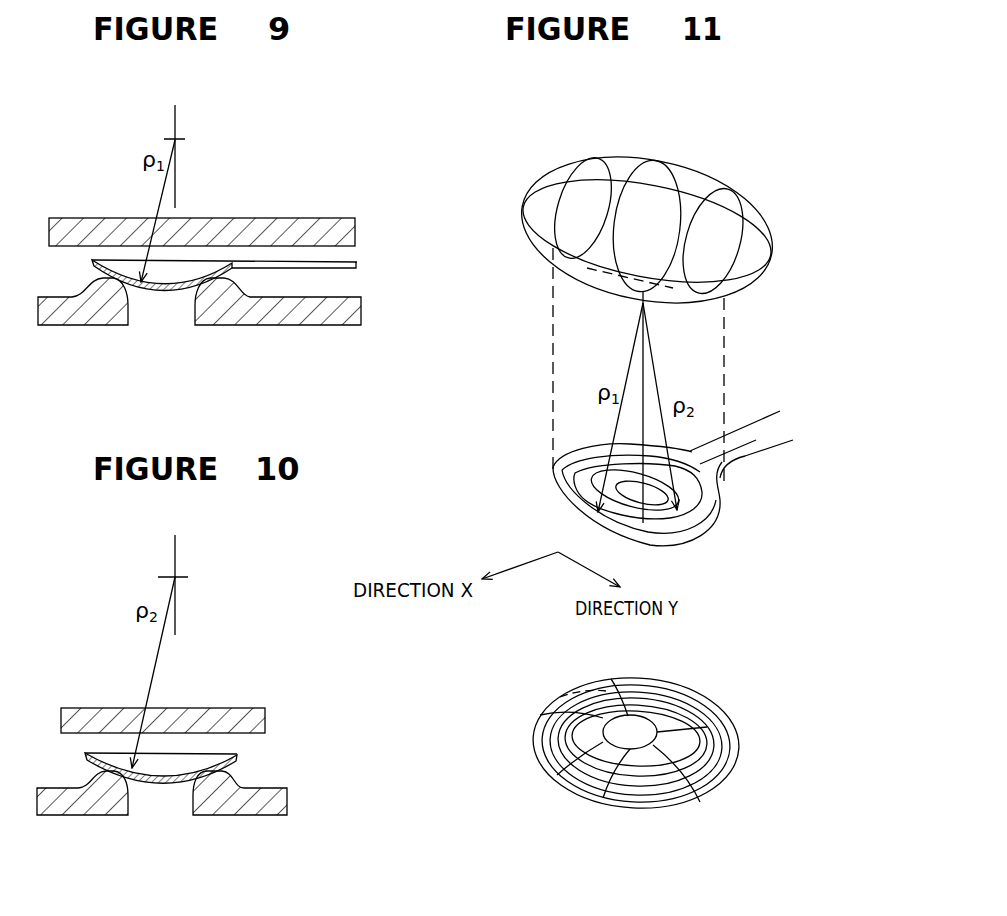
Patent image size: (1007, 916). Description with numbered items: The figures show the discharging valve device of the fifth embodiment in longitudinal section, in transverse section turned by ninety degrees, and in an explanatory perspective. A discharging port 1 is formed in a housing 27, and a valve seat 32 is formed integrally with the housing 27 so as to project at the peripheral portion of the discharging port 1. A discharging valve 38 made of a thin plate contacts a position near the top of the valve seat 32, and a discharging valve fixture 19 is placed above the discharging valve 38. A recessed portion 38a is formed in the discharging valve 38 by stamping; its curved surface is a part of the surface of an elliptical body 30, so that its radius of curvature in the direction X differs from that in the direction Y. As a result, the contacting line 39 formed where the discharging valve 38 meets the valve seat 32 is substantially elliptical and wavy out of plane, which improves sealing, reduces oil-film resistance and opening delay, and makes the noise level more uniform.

In FIG. 9, the discharging port 1 is at (163, 307).
In FIG. 10, the discharging port 1 is at (167, 797).
In FIG. 9, the discharging valve fixture 19 is at (60, 233).
In FIG. 10, the discharging valve fixture 19 is at (70, 723).
In FIG. 9, the housing 27 is at (88, 308).
In FIG. 10, the housing 27 is at (72, 800).
In FIG. 11, the elliptical body 30 is at (763, 242).
In FIG. 9, the valve seat 32 is at (202, 288).
In FIG. 10, the valve seat 32 is at (200, 780).
In FIG. 11, the valve seat 32 is at (573, 783).
In FIG. 9, the discharging valve 38 is at (357, 264).
In FIG. 11, the discharging valve 38 is at (780, 432).
In FIG. 9, the recessed portion 38a is at (193, 270).
In FIG. 10, the recessed portion 38a is at (182, 767).
In FIG. 11, the recessed portion 38a is at (702, 535).
In FIG. 11, the contacting line 39 is at (702, 728).